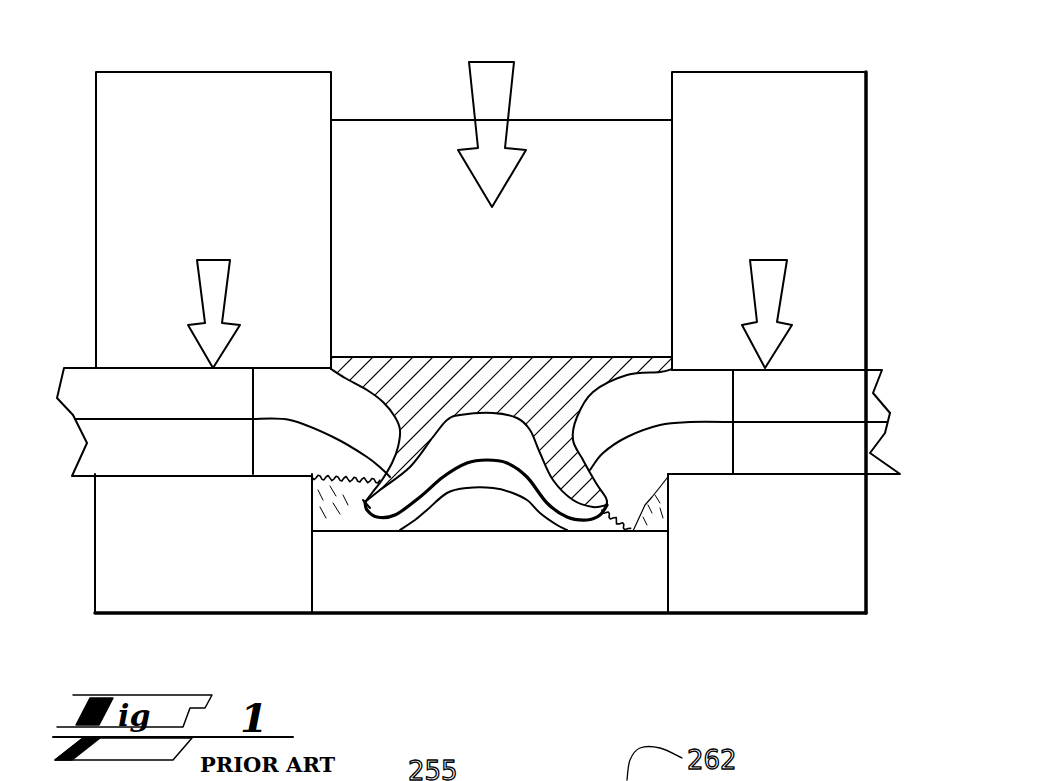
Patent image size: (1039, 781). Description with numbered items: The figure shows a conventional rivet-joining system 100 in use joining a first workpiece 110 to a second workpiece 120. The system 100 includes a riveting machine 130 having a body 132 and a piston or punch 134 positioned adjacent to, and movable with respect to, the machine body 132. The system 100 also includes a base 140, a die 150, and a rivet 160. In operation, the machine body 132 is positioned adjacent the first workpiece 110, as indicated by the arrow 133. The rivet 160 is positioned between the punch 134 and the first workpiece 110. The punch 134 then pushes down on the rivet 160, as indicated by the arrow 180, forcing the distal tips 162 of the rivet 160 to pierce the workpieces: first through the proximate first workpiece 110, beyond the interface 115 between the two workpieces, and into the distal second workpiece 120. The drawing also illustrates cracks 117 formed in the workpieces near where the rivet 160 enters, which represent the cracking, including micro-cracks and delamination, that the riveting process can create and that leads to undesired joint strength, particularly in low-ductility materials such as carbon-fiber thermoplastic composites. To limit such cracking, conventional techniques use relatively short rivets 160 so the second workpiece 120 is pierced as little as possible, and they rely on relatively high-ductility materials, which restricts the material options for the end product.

The rivet-joining system 100 is at (92, 101).
The first workpiece 110 is at (185, 410).
The interface 115 is at (283, 417).
The cracks 117 is at (343, 483).
The second workpiece 120 is at (190, 458).
The riveting machine 130 is at (879, 113).
The body 132 is at (165, 123).
The arrow 133 is at (200, 290).
The punch 134 is at (405, 173).
The base 140 is at (158, 519).
The die 150 is at (517, 601).
The rivet 160 is at (585, 358).
The distal tips 162 is at (362, 495).
The arrow 180 is at (512, 95).